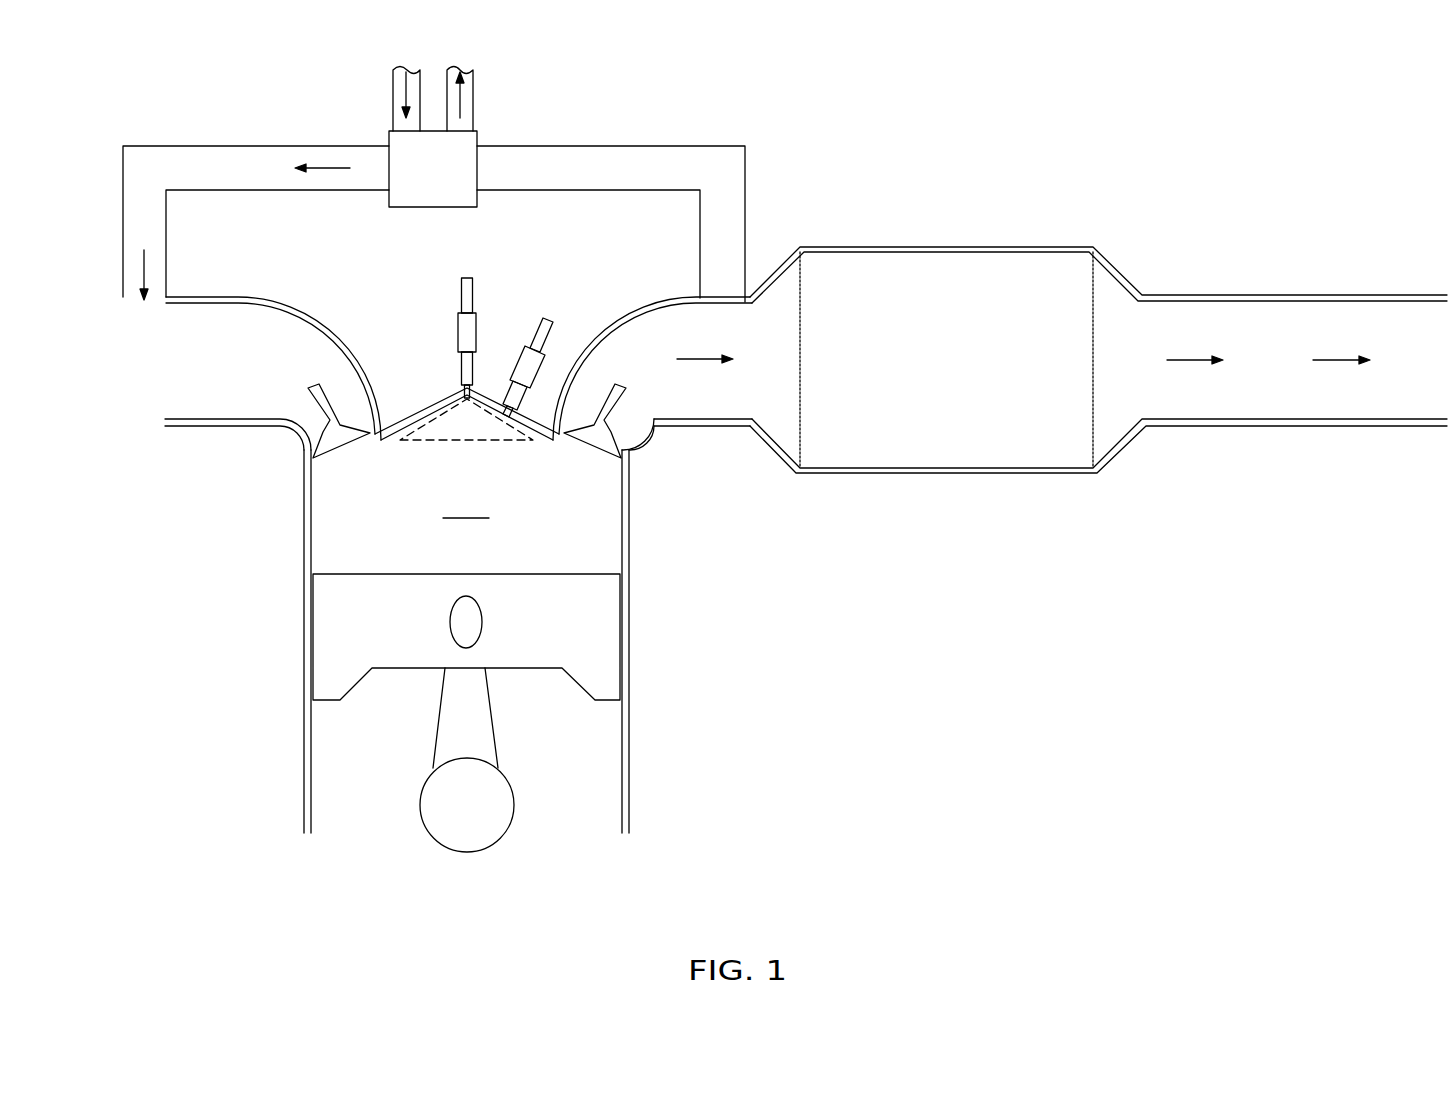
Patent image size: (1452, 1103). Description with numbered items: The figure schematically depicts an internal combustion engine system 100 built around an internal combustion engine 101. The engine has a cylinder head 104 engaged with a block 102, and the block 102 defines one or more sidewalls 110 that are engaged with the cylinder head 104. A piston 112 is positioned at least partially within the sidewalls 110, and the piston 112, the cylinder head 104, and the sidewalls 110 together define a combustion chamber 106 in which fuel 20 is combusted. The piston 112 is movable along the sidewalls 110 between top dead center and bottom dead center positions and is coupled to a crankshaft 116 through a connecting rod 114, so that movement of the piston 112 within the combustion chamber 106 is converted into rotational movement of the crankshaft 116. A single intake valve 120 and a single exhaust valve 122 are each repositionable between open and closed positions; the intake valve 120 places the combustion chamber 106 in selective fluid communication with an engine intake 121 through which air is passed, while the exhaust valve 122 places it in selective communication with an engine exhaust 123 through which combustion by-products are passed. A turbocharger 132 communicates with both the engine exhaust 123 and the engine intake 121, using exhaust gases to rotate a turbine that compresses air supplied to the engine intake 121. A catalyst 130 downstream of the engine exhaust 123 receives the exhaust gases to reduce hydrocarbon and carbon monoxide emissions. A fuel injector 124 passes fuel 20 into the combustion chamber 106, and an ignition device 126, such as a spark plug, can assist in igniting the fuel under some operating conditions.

The fuel 20 is at (510, 441).
The internal combustion engine system 100 is at (875, 580).
The internal combustion engine 101 is at (750, 607).
The block 102 is at (280, 836).
The cylinder head 104 is at (543, 294).
The combustion chamber 106 is at (467, 459).
The sidewalls 110 is at (303, 757).
The piston 112 is at (556, 683).
The connecting rod 114 is at (438, 723).
The crankshaft 116 is at (520, 831).
The intake valve 120 is at (345, 404).
The engine intake 121 is at (216, 318).
The exhaust valve 122 is at (601, 379).
The engine exhaust 123 is at (721, 396).
The fuel injector 124 is at (461, 299).
The ignition device 126 is at (530, 356).
The catalyst 130 is at (1034, 462).
The turbocharger 132 is at (433, 208).